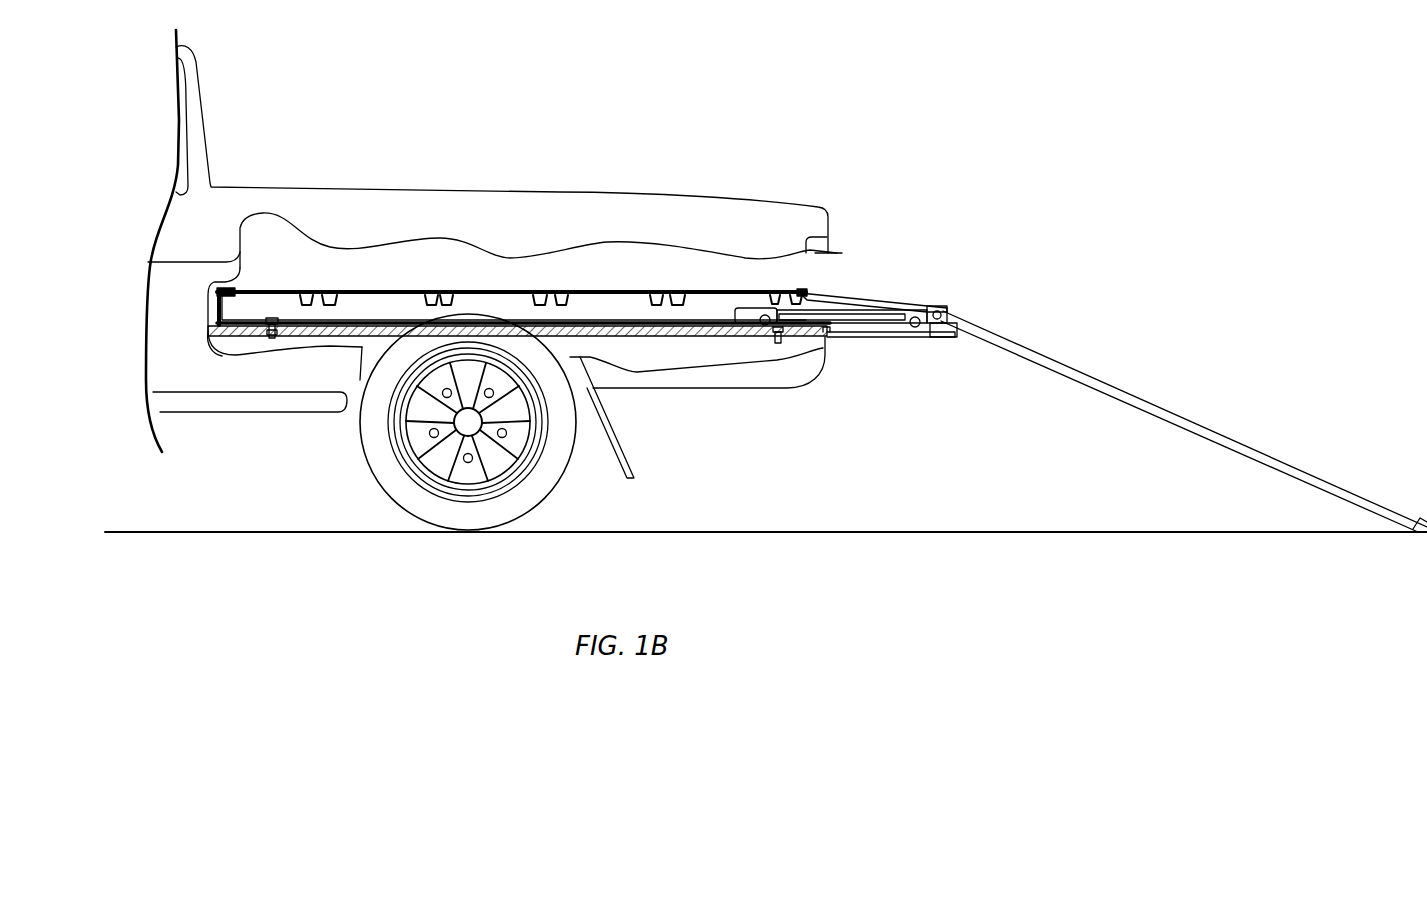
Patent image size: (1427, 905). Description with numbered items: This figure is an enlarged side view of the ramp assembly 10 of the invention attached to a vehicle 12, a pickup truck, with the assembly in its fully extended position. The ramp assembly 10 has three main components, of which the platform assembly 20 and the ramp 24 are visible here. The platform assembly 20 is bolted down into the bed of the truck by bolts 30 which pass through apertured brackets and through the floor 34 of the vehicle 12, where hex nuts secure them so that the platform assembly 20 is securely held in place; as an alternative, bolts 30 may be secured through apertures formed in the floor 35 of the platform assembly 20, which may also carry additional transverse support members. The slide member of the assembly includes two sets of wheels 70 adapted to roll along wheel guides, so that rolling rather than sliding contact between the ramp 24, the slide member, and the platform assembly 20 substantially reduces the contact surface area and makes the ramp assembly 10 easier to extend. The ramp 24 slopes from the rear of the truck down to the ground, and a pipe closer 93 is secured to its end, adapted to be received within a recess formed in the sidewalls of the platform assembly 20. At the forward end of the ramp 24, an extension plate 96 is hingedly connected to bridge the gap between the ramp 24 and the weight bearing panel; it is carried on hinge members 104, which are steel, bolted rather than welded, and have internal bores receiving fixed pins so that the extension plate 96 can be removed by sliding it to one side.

The ramp assembly 10 is at (701, 506).
The vehicle 12 is at (598, 102).
The platform assembly 20 is at (336, 290).
The ramp 24 is at (1065, 370).
The bolts 30 is at (273, 333).
The floor 34 is at (237, 333).
The floor 35 is at (613, 283).
The wheels 70 is at (760, 323).
The pipe closer 93 is at (1425, 505).
The extension plate 96 is at (850, 296).
The hinge members 104 is at (945, 328).